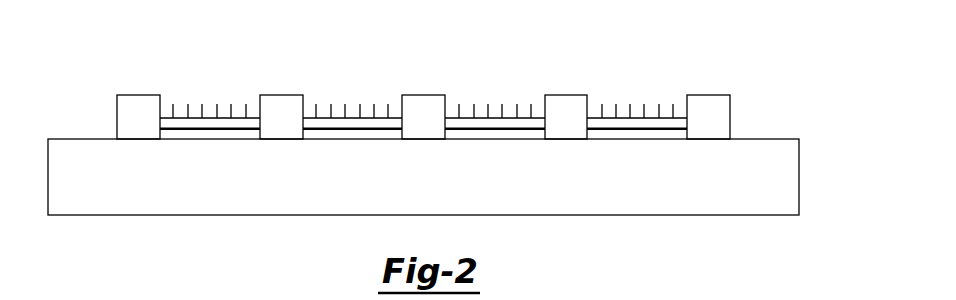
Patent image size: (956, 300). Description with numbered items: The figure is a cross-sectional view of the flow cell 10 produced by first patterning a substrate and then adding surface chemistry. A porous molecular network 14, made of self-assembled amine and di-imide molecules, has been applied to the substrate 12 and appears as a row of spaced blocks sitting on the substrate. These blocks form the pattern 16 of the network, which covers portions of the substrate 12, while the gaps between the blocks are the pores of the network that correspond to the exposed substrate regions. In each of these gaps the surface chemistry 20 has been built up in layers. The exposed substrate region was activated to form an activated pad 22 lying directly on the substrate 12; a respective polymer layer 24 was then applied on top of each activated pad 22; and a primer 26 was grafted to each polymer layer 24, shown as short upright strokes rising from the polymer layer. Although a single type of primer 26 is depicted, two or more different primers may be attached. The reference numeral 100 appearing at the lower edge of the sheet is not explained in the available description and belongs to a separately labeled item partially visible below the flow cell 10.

The sensor device 10 is at (72, 89).
The substrate 12 is at (785, 185).
The electrode 14 is at (570, 107).
The contact pad 16 is at (465, 84).
The sensing structure 20 is at (439, 80).
The bottom layer 22 is at (677, 135).
The intermediate layer 24 is at (608, 125).
The nanostructures 26 is at (630, 114).
The system 100 is at (762, 299).